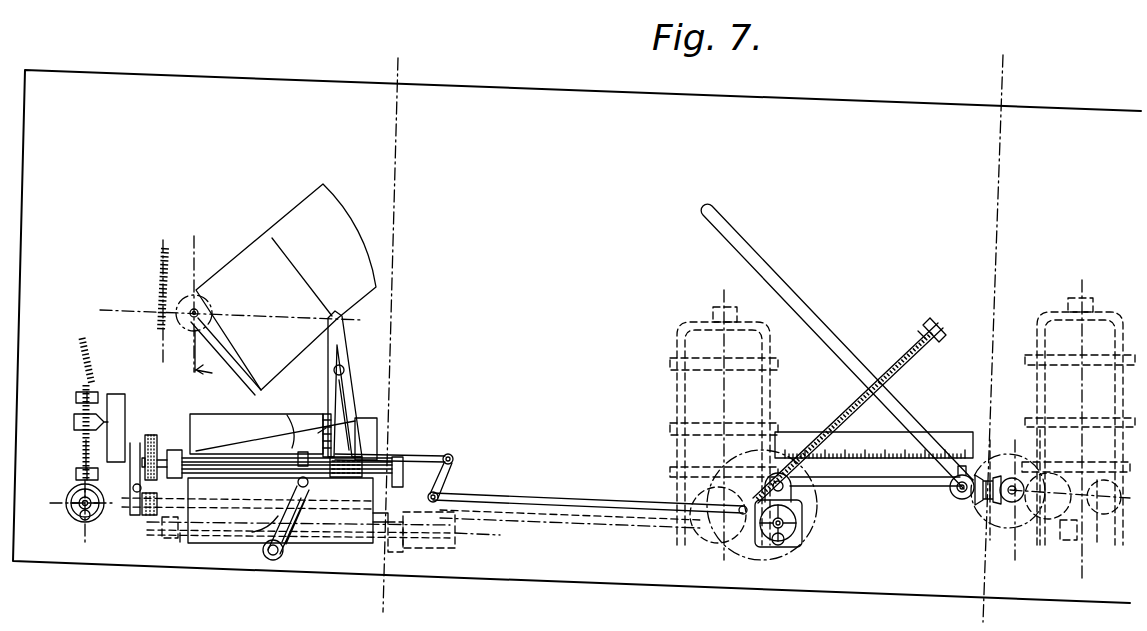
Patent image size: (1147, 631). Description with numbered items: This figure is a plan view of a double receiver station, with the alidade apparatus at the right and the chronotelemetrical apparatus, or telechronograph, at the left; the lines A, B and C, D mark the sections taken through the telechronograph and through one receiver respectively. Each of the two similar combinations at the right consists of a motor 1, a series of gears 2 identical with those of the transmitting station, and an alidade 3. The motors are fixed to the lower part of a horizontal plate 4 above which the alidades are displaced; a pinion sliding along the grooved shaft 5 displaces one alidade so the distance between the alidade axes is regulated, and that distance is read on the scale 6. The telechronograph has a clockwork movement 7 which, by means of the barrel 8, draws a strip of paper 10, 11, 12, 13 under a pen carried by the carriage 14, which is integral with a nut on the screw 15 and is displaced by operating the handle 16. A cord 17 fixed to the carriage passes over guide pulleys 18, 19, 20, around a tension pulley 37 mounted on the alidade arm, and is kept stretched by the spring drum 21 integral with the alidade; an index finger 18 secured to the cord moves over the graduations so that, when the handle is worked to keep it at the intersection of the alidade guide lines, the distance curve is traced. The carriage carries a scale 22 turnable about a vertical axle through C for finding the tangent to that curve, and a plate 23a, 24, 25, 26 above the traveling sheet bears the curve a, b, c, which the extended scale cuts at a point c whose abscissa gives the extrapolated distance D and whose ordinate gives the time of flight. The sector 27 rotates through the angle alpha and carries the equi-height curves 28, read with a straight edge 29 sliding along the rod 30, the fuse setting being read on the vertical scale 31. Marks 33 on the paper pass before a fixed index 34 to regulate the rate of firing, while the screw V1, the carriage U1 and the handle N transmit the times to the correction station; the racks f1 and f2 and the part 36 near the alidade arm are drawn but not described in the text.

The section line A B is at (328, 332).
The section line A B A is at (306, 561).
The section line C D is at (989, 338).
The section line C D C is at (626, 536).
The horizontal plate 4 is at (539, 187).
The adjusting rack f2 is at (155, 296).
The adjusting rack f1 is at (82, 401).
The sector 27 is at (238, 287).
The equi-height curves 28 is at (306, 271).
The curve abc a is at (226, 356).
The carriage U1 is at (86, 428).
The screw V1 is at (73, 455).
The handle N is at (80, 512).
The screw 15 is at (162, 442).
The scale 22 is at (287, 479).
The plate 24 is at (256, 434).
The plate 23a is at (273, 437).
The curve abc b is at (275, 431).
The point c is at (317, 429).
The carriage 14 is at (288, 422).
The vertical scale 31 is at (342, 445).
The plate 25 is at (369, 439).
The plate 26 is at (372, 444).
The straight edge 29 is at (353, 384).
The rod 30 is at (390, 446).
The index finger 18 is at (455, 454).
The guide pulley 19 is at (440, 497).
The cord 17 is at (590, 507).
The fixed index 34 is at (405, 493).
The strip of paper 11 is at (280, 510).
The strip of paper 12 is at (363, 492).
The marks 33 is at (368, 520).
The strip of paper 13 is at (367, 543).
The strip of paper 10 is at (286, 520).
The barrel 8 is at (179, 539).
The clockwork movement 7 is at (444, 532).
The motor 1 is at (902, 430).
The alidade 3 is at (778, 284).
The spring drum 21 is at (942, 327).
The link 36 is at (822, 432).
The tension pulley 37 is at (900, 350).
The scale 6 is at (874, 436).
The grooved shaft 5 is at (882, 478).
The guide pulley 20 is at (755, 518).
The handle 16 is at (780, 540).
The series of gears 2 is at (806, 528).